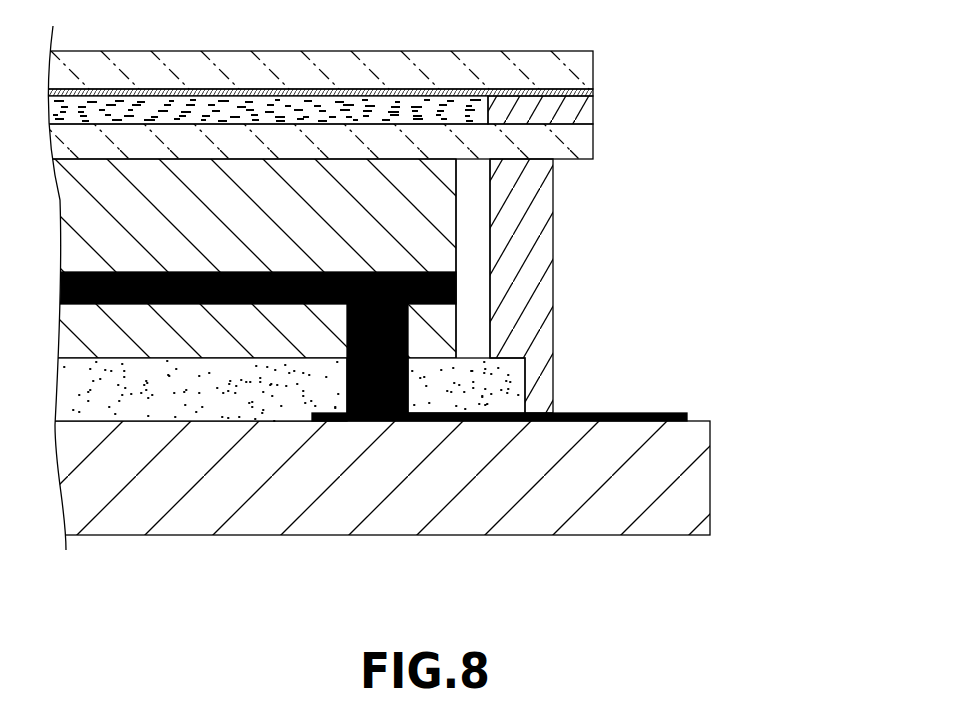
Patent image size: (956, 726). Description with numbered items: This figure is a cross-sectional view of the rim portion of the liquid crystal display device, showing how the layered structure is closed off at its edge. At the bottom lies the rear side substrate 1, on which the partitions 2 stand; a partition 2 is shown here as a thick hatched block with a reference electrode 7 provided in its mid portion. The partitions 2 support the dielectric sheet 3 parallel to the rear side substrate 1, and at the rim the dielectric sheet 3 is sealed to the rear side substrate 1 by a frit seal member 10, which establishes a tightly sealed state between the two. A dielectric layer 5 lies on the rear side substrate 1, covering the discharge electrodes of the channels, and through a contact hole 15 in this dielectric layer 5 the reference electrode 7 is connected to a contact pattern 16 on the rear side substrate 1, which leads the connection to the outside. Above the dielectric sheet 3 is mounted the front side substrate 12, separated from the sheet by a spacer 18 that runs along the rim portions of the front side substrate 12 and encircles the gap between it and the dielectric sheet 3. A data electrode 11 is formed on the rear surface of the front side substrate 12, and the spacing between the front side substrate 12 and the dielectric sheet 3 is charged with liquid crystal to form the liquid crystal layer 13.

The rear side substrate 1 is at (710, 482).
The partition 2 is at (438, 217).
The dielectric sheet 3 is at (595, 140).
The dielectric layer 5 is at (500, 383).
The reference electrode 7 is at (460, 287).
The frit seal member 10 is at (547, 317).
The data electrode 11 is at (593, 91).
The front side substrate 12 is at (538, 62).
The liquid crystal layer 13 is at (418, 110).
The contact hole 15 is at (410, 385).
The contact pattern 16 is at (687, 413).
The spacer 18 is at (582, 110).